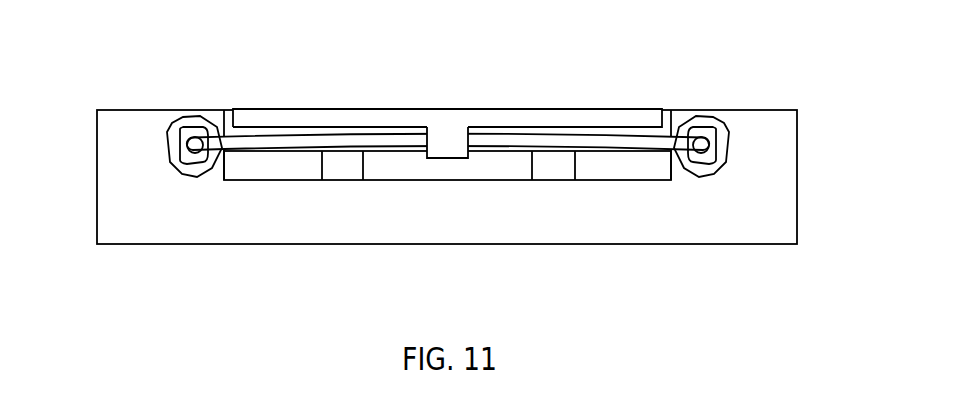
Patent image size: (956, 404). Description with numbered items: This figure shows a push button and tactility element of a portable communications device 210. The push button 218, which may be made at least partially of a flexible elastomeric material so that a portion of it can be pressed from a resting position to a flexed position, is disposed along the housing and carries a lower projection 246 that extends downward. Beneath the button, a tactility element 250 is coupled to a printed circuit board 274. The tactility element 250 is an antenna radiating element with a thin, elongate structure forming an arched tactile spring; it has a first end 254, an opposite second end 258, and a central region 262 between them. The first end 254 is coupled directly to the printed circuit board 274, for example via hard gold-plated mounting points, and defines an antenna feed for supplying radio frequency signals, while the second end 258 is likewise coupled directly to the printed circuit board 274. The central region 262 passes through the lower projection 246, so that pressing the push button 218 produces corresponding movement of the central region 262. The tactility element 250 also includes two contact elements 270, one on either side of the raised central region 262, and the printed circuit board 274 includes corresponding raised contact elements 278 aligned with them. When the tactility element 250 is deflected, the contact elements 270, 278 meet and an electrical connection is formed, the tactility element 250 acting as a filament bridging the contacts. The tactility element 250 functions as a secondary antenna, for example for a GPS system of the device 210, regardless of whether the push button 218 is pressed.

The portable communications device 210 is at (441, 132).
The push button 218 is at (447, 138).
The lower projection 246 is at (455, 142).
The tactility element 250 is at (448, 147).
The first end 254 is at (703, 146).
The second end 258 is at (190, 147).
The central region 262 is at (407, 143).
The contact element 270 is at (340, 142).
The printed circuit board 274 is at (103, 180).
The contact element 278 is at (328, 172).